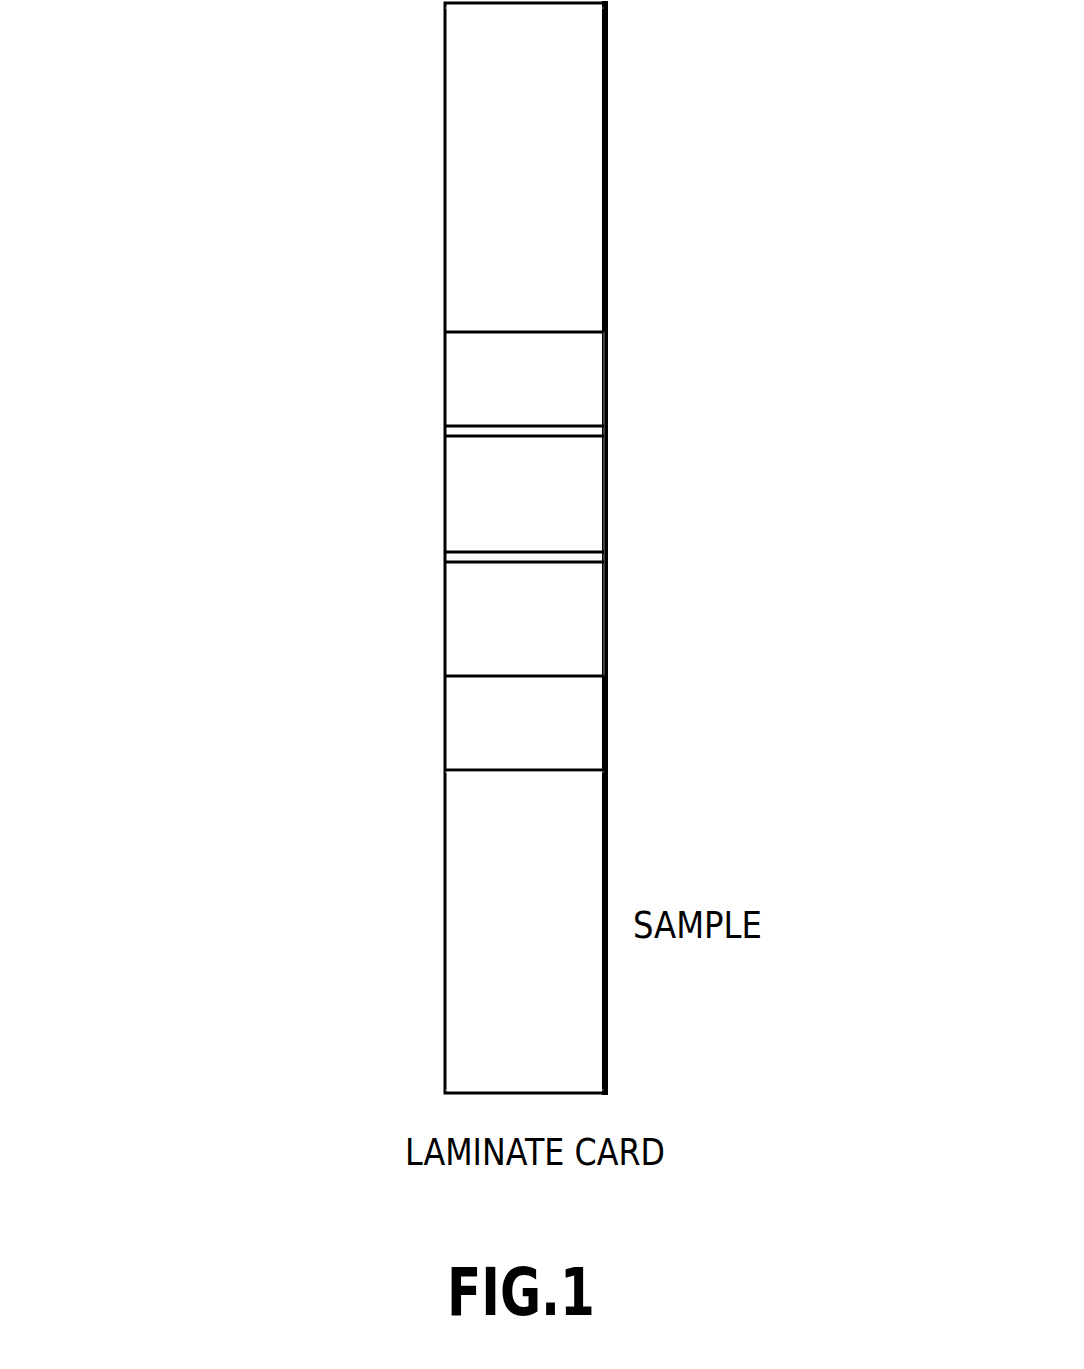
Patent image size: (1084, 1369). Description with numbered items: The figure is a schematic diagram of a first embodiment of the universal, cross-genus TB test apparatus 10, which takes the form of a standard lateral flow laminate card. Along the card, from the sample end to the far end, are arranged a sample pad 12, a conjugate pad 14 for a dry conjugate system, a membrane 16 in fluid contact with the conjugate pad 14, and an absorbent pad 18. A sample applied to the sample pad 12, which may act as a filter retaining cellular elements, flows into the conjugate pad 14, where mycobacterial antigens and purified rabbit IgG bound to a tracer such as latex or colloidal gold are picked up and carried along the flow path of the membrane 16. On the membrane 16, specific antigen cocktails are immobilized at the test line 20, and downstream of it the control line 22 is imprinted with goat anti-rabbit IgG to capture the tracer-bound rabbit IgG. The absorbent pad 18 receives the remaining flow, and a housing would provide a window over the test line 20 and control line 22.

The TB test apparatus 10 is at (160, 336).
The sample pad 12 is at (445, 942).
The conjugate pad 14 is at (445, 745).
The membrane 16 is at (630, 405).
The absorbent pad 18 is at (446, 172).
The test line 20 is at (481, 563).
The control line 22 is at (481, 437).